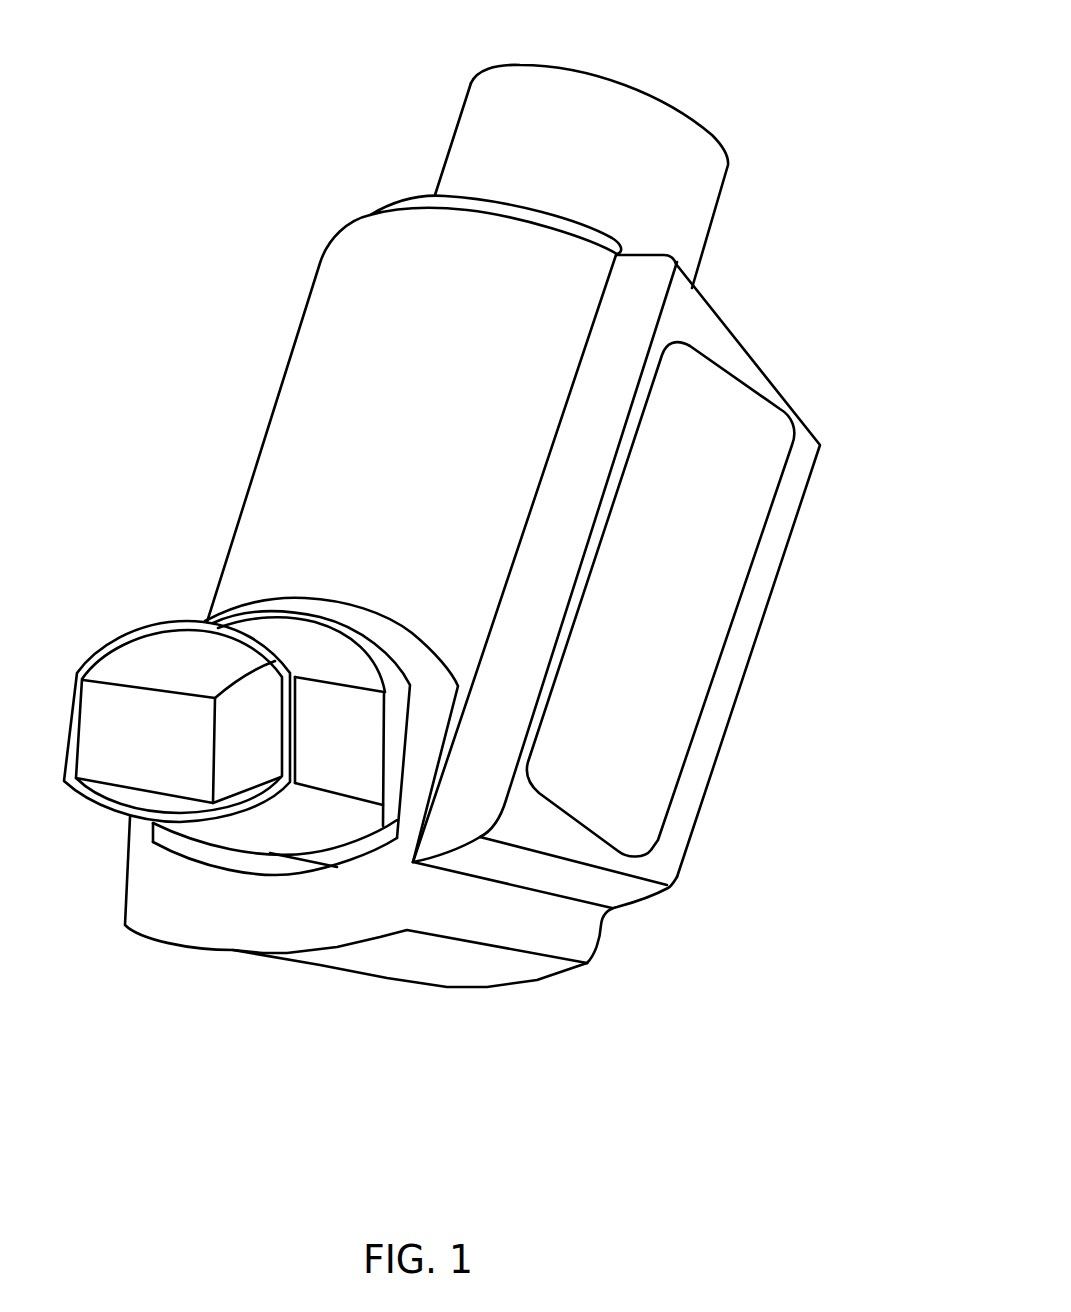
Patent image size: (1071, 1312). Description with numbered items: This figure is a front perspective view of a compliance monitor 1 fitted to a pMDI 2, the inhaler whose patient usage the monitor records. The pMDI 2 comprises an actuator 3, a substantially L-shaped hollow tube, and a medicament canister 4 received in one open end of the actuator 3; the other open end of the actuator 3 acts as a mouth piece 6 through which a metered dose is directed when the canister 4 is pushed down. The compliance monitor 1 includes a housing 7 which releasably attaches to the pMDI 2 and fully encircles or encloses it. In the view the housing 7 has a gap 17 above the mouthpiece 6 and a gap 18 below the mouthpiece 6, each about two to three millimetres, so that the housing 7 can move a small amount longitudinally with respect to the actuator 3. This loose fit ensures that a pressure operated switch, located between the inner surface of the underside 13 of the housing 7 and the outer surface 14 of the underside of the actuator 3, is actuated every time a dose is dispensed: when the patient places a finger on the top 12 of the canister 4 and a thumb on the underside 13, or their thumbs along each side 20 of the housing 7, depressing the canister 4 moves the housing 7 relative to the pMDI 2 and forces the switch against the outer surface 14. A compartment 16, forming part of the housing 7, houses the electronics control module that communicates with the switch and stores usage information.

The compliance monitor 1 is at (442, 544).
The pMDI 2 is at (542, 149).
The actuator 3 is at (427, 203).
The medicament canister 4 is at (680, 215).
The mouth piece 6 is at (155, 630).
The housing 7 is at (513, 550).
The top of the canister 12 is at (600, 149).
The underside of the housing 13 is at (380, 976).
The outer surface of the underside of the actuator 14 is at (287, 855).
The compartment 16 is at (661, 599).
The gap above the mouthpiece 17 is at (307, 623).
The gap below the mouthpiece 18 is at (231, 900).
The side of the housing 20 is at (637, 813).